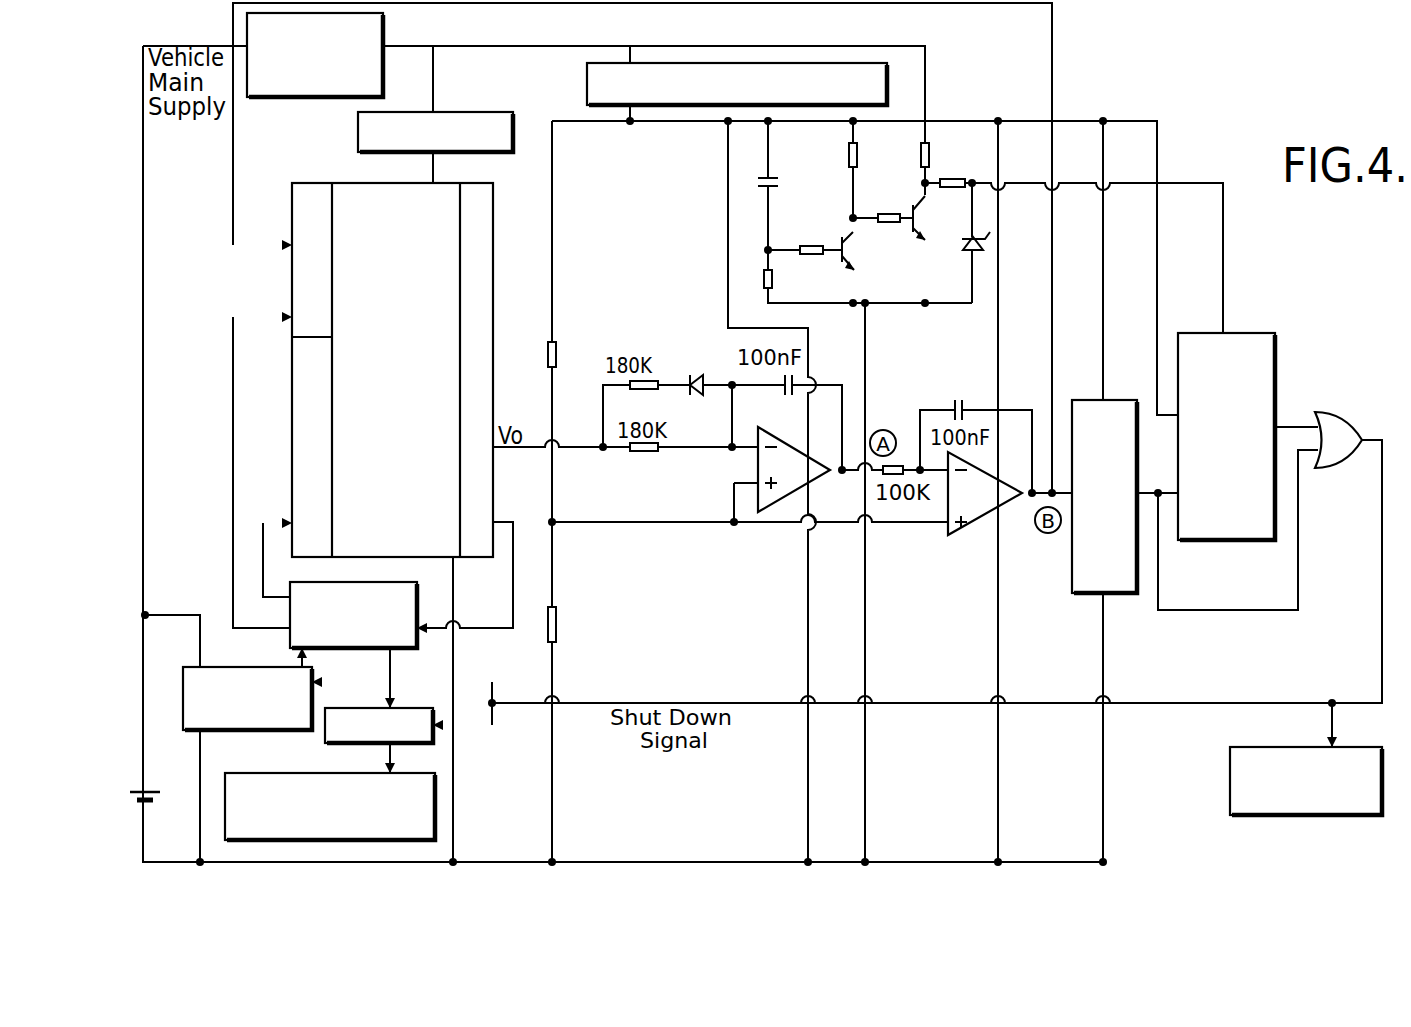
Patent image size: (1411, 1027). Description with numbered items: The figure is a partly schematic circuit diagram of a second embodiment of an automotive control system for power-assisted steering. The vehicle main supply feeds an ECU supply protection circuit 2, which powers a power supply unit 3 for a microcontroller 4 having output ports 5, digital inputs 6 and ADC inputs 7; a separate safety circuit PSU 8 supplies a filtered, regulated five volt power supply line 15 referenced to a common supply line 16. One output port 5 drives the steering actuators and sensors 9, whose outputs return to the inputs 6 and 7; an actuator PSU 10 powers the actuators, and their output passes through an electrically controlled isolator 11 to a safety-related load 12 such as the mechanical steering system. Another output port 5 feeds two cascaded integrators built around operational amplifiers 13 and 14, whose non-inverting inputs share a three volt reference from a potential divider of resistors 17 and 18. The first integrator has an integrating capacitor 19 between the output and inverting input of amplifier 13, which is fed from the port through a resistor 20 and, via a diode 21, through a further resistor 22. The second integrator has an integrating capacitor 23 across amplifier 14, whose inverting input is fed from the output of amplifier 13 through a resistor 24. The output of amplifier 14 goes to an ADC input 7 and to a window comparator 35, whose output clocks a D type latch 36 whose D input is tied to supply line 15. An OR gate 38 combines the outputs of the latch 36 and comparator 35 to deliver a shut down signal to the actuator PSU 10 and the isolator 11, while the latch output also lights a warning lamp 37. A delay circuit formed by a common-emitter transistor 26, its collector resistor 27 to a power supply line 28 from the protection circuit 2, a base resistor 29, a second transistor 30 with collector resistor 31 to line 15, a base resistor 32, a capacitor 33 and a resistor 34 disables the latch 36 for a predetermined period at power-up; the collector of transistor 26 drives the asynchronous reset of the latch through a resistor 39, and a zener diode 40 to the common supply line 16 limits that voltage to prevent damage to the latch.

The ECU supply protection circuit 2 is at (285, 98).
The power supply unit 3 is at (423, 110).
The microcontroller 4 is at (430, 345).
The output ports 5 is at (473, 263).
The digital inputs 6 is at (302, 367).
The ADC inputs 7 is at (292, 225).
The safety circuit PSU 8 is at (585, 84).
The steering actuators and sensors 9 is at (392, 582).
The actuator PSU 10 is at (250, 664).
The isolator 11 is at (340, 748).
The safety-related load 12 is at (247, 773).
The operational amplifier 13 is at (745, 475).
The operational amplifier 14 is at (975, 528).
The power supply line 15 is at (942, 120).
The common supply line 16 is at (673, 860).
The resistor 17 is at (558, 347).
The resistor 18 is at (568, 601).
The integrating capacitor 19 is at (783, 380).
The resistor 20 is at (632, 455).
The diode 21 is at (700, 373).
The resistor 22 is at (643, 393).
The integrating capacitor 23 is at (968, 402).
The resistor 24 is at (903, 450).
The transistor 26 is at (923, 235).
The resistor 27 is at (930, 155).
The power supply line 28 is at (927, 68).
The resistor 29 is at (888, 211).
The transistor 30 is at (846, 268).
The resistor 31 is at (849, 163).
The resistor 32 is at (818, 247).
The capacitor 33 is at (776, 187).
The resistor 34 is at (767, 283).
The window comparator 35 is at (1070, 577).
The latch 36 is at (1277, 382).
The warning lamp 37 is at (1228, 793).
The OR gate 38 is at (1330, 408).
The resistor 39 is at (952, 191).
The zener diode 40 is at (967, 244).